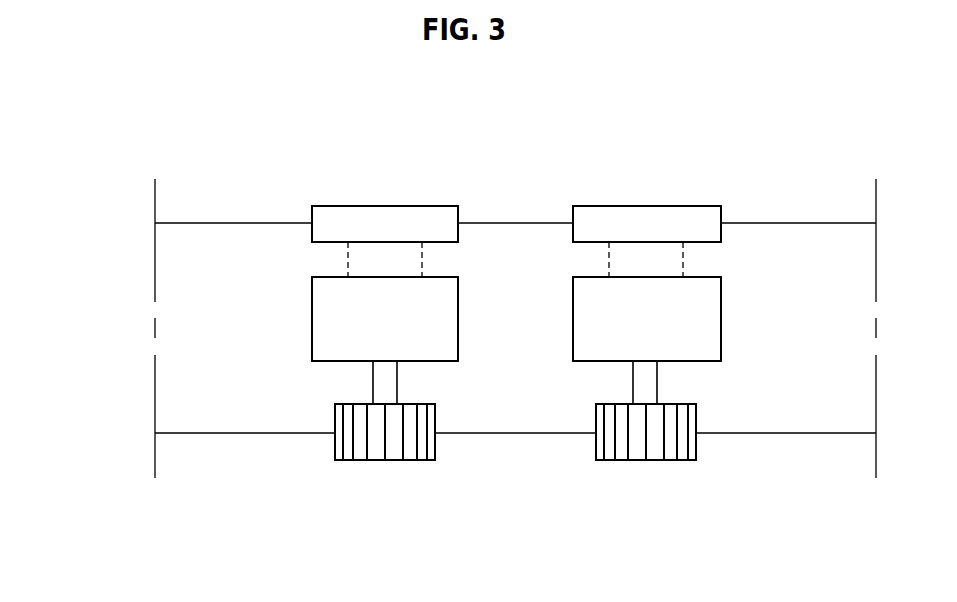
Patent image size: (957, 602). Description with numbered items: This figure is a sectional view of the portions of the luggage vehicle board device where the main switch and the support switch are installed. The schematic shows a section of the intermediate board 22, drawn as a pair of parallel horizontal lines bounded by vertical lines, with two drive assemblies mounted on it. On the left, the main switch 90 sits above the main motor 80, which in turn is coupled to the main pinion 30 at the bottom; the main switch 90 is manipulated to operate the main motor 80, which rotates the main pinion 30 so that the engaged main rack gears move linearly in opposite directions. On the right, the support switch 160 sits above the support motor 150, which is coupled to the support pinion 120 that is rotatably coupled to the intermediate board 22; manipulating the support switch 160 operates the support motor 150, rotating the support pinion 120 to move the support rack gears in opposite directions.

The intermediate board 22 is at (192, 325).
The main pinion 30 is at (396, 450).
The main motor 80 is at (328, 327).
The main switch 90 is at (393, 205).
The support pinion 120 is at (655, 450).
The support motor 150 is at (703, 325).
The support switch 160 is at (639, 205).